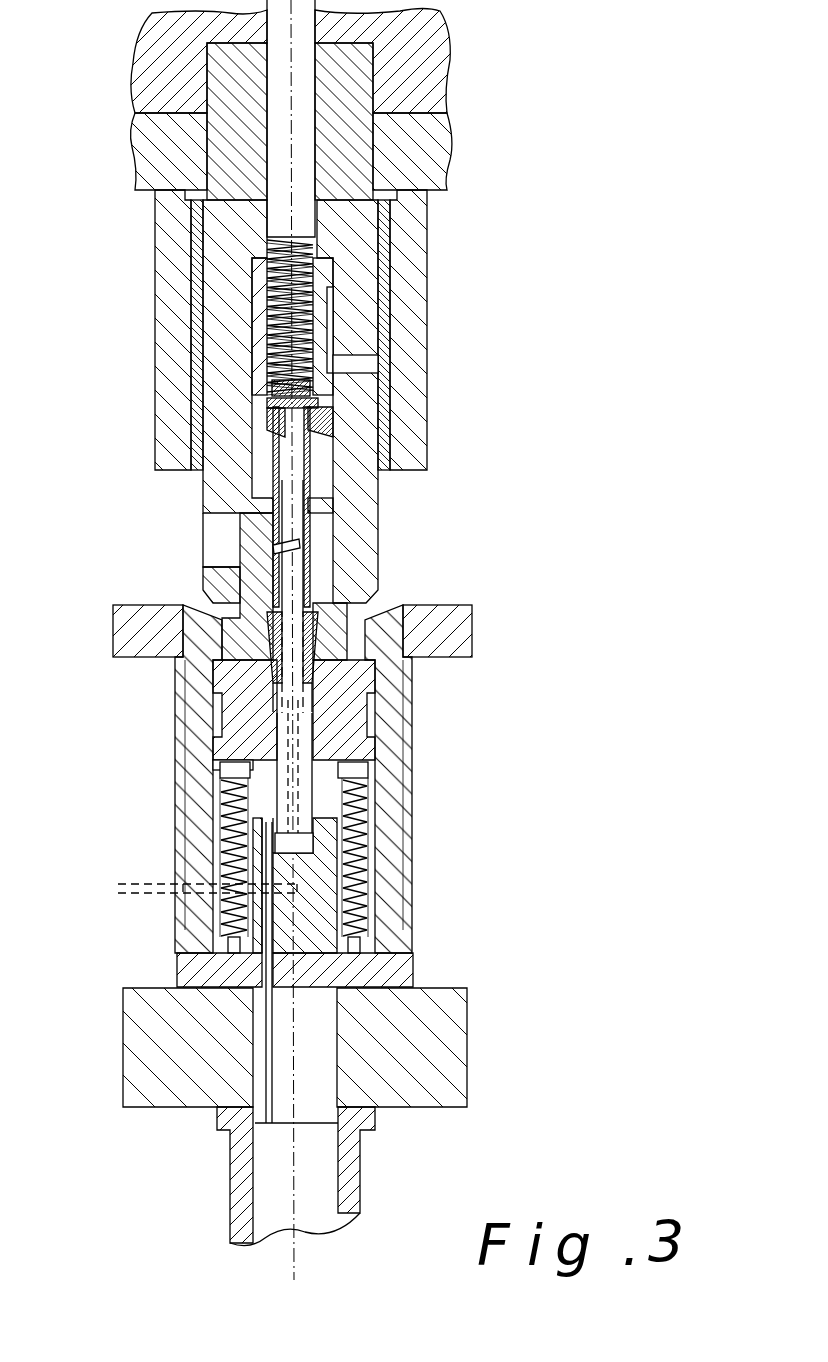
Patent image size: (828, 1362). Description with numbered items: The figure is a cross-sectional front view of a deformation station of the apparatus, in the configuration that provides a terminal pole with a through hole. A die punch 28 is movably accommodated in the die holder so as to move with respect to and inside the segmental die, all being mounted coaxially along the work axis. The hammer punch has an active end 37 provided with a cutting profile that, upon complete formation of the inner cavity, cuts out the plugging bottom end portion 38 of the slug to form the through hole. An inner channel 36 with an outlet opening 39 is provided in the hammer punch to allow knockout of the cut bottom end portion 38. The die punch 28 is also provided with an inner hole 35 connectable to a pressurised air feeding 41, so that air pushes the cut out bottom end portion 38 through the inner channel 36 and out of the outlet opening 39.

The die punch 28 is at (303, 698).
The inner hole 35 is at (290, 798).
The inner channel 36 is at (303, 583).
The active end 37 is at (290, 612).
The bottom end portion 38 is at (273, 550).
The outlet opening 39 is at (307, 530).
The pressurised air feeding 41 is at (172, 890).